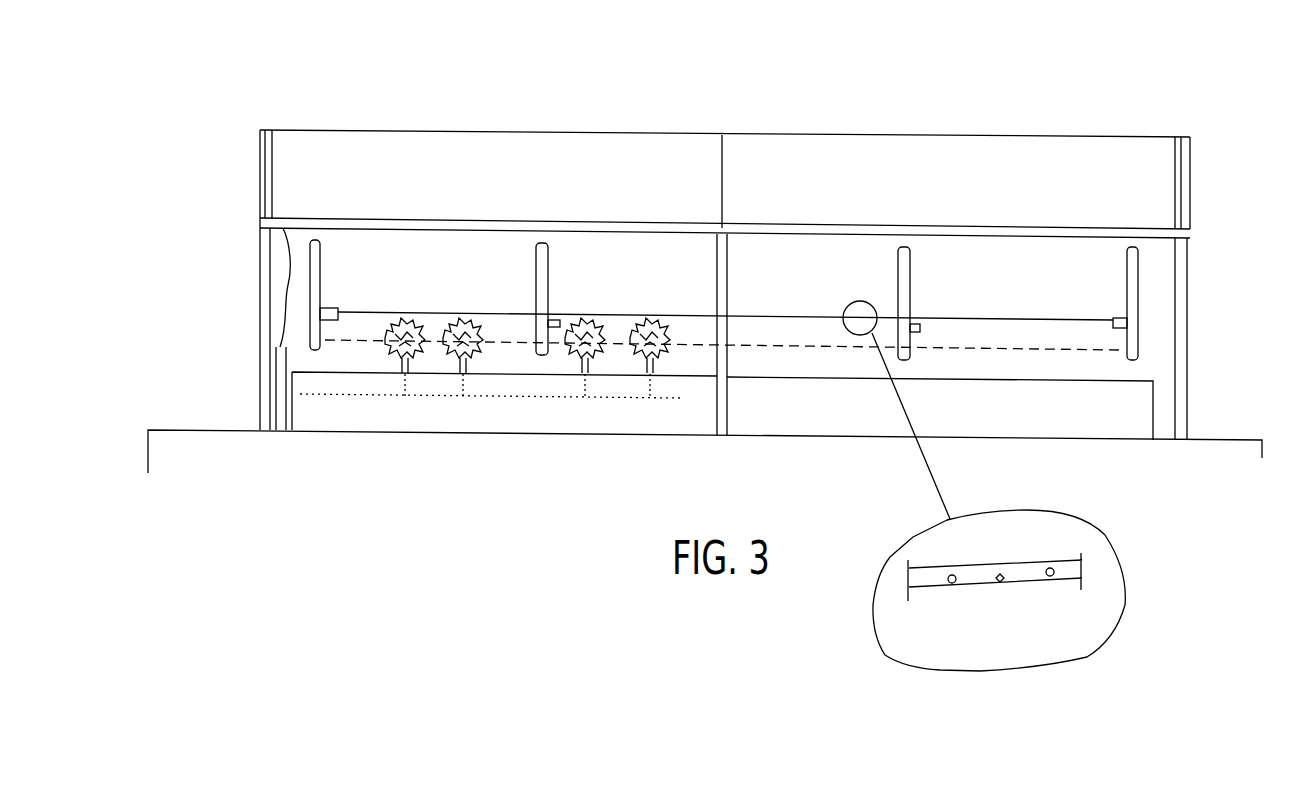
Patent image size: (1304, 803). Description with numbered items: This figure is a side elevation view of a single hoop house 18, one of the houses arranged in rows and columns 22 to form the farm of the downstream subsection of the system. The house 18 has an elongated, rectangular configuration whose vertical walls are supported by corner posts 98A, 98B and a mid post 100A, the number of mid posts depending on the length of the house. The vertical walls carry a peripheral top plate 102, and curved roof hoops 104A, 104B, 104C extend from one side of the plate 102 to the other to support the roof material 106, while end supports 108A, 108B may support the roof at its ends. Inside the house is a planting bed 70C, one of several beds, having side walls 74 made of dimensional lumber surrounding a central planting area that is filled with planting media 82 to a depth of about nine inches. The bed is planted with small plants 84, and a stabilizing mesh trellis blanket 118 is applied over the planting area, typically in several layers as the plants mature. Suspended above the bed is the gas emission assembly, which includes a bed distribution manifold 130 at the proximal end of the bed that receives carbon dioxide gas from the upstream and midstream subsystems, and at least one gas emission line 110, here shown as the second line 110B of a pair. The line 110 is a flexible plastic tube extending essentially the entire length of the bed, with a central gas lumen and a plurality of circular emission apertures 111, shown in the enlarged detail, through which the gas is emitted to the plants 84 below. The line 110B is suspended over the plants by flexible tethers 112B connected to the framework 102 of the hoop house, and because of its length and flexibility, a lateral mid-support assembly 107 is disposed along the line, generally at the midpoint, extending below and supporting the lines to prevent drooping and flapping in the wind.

The column 22 is at (216, 141).
The hoop house 18 is at (220, 246).
The roof material 106 is at (381, 131).
The roof hoop 104A is at (263, 188).
The roof hoop 104B is at (723, 173).
The roof hoop 104C is at (1175, 165).
The end support 108A is at (259, 180).
The end support 108B is at (1191, 198).
The top plate 102 is at (390, 222).
The lateral mid-support assembly 107 is at (560, 258).
The flexible tether 112B is at (307, 299).
The gas emission line 110B is at (360, 311).
The plant 84 is at (414, 316).
The corner post 98A is at (259, 322).
The corner post 98B is at (1188, 300).
The bed distribution manifold 130 is at (275, 383).
The bed 70C is at (1205, 390).
The side wall 74 is at (815, 418).
The stabilizing mesh trellis blanket 118 is at (995, 352).
The planting media 82 is at (352, 396).
The mid post 100A is at (723, 434).
The gas emission line 110 is at (977, 567).
The emission aperture 111 is at (950, 582).